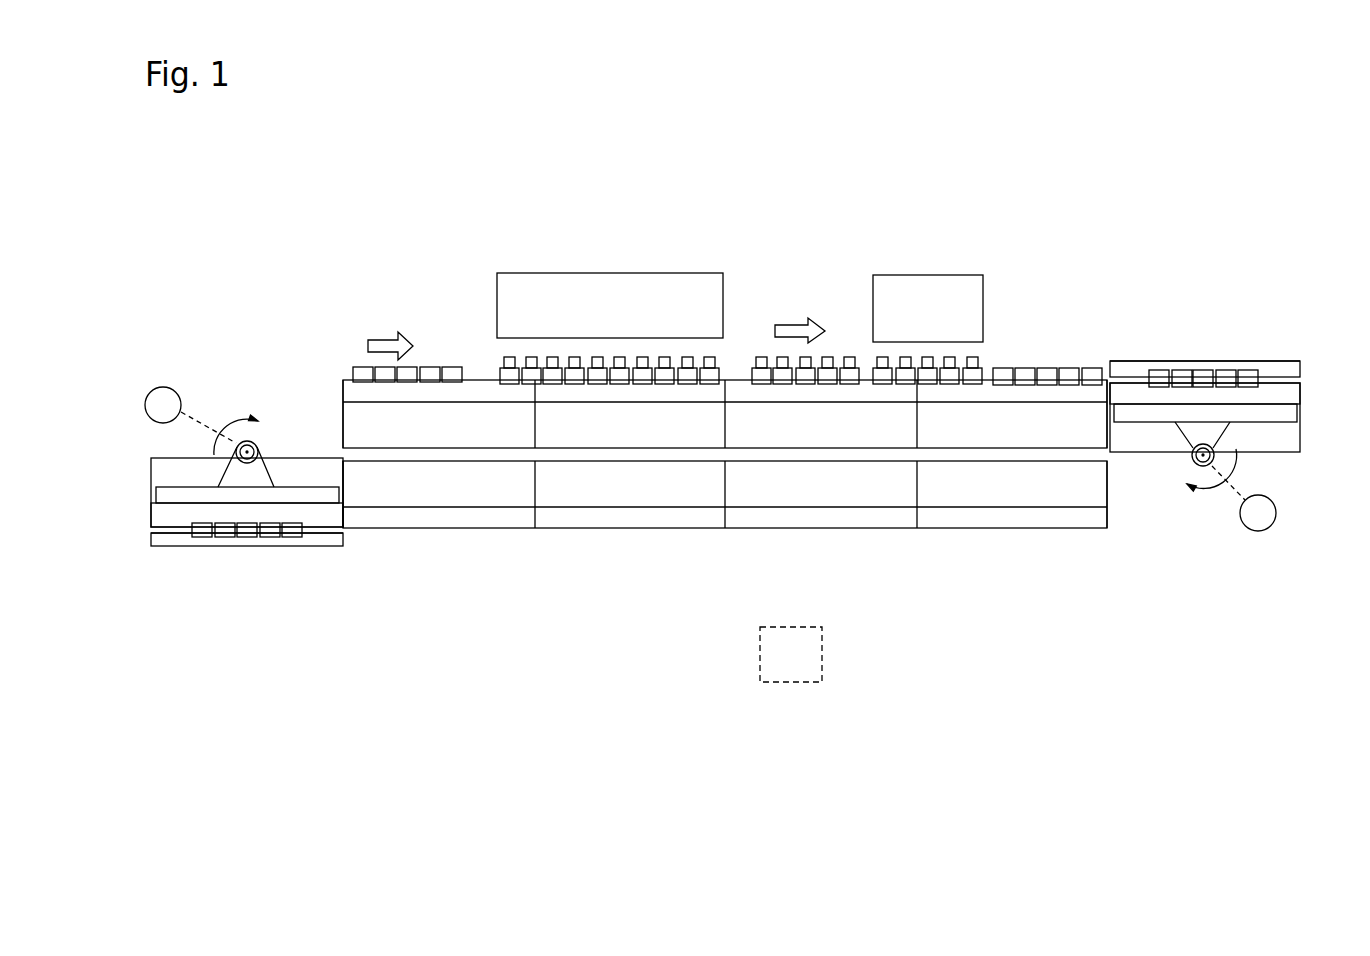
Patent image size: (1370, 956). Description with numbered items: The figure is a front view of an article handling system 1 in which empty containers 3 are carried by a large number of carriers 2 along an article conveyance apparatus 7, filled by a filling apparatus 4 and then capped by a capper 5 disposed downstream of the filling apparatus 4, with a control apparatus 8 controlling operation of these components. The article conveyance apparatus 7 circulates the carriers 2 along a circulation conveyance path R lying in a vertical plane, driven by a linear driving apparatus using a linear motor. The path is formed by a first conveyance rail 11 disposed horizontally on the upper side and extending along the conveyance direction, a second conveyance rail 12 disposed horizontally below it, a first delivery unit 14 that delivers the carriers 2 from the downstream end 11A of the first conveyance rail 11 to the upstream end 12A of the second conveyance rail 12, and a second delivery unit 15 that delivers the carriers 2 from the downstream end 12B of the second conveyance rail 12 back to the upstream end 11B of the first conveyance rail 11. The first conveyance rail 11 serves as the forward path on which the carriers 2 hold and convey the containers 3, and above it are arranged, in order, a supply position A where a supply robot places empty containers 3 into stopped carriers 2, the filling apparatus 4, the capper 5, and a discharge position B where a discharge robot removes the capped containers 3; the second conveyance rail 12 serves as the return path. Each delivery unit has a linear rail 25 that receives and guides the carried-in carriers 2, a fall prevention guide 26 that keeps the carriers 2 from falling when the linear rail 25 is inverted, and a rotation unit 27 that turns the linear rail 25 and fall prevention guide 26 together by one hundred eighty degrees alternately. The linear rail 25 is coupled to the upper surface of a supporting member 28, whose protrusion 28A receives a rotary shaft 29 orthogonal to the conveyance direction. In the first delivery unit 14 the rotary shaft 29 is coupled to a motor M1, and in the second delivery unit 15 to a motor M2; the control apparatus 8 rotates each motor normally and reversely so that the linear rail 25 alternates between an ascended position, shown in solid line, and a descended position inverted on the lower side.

The article handling system 1 is at (832, 167).
The carrier 2 is at (385, 384).
The container 3 is at (530, 357).
The filling apparatus 4 is at (603, 273).
The capper 5 is at (973, 275).
The article conveyance apparatus 7 is at (737, 367).
The control apparatus 8 is at (808, 645).
The first conveyance rail 11 is at (337, 387).
The downstream end of the first conveyance rail 11A is at (1093, 385).
The upstream end of the first conveyance rail 11B is at (357, 397).
The second conveyance rail 12 is at (480, 522).
The upstream end of the second conveyance rail 12A is at (1092, 518).
The downstream end of the second conveyance rail 12B is at (347, 515).
The first delivery unit 14 is at (1205, 352).
The second delivery unit 15 is at (210, 558).
The linear rail 25 is at (155, 515).
The fall prevention guide 26 is at (327, 546).
The rotation unit 27 is at (257, 449).
The supporting member 28 is at (190, 495).
The protrusion 28A is at (222, 470).
The rotary shaft 29 is at (253, 462).
The motor M1 is at (1231, 490).
The motor M2 is at (201, 421).
The supply position A is at (477, 347).
The discharge position B is at (1023, 355).
The circulation conveyance path R is at (567, 528).